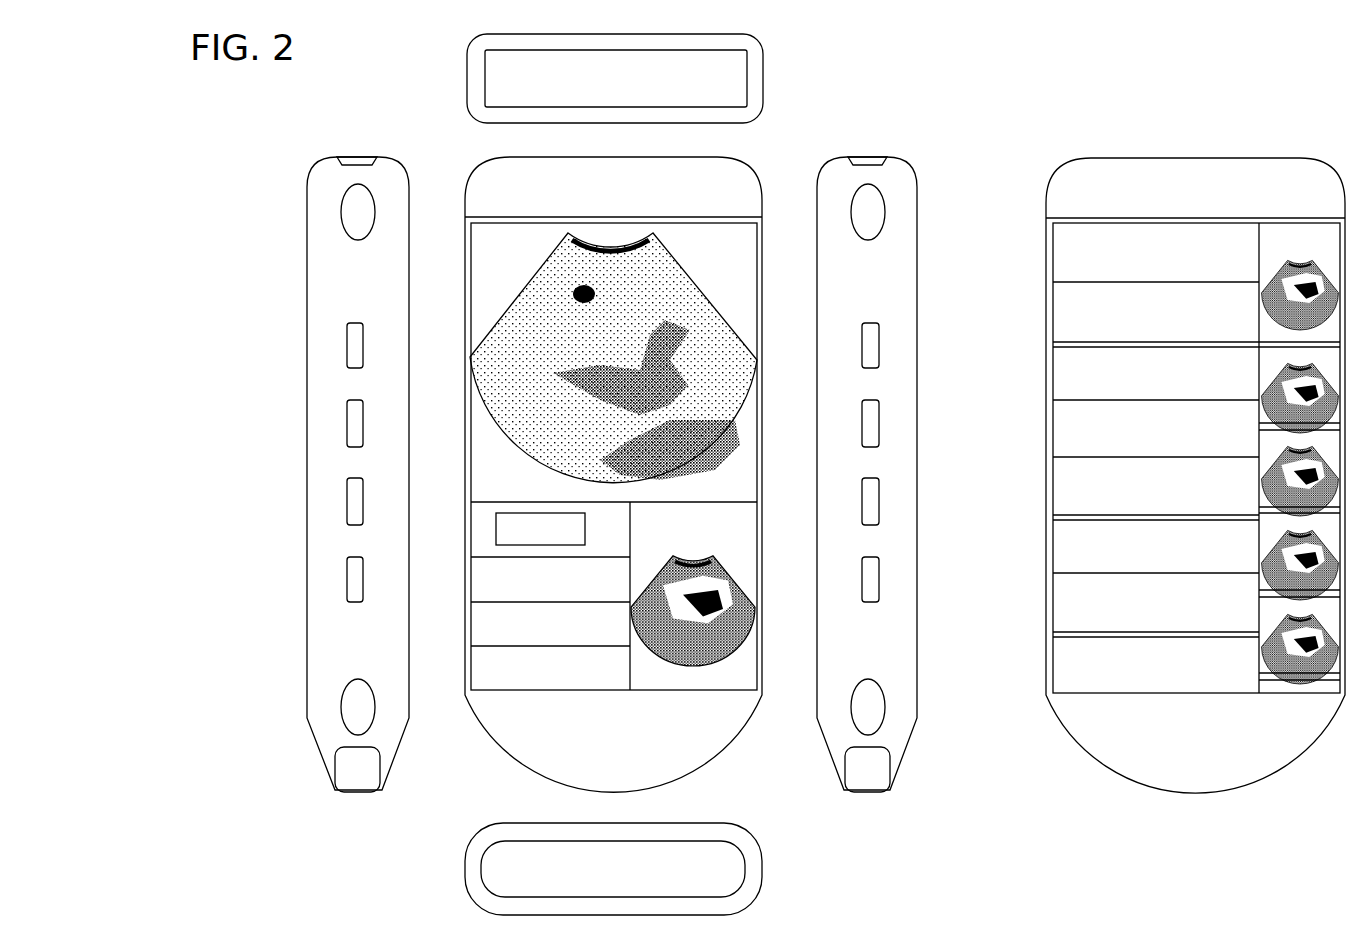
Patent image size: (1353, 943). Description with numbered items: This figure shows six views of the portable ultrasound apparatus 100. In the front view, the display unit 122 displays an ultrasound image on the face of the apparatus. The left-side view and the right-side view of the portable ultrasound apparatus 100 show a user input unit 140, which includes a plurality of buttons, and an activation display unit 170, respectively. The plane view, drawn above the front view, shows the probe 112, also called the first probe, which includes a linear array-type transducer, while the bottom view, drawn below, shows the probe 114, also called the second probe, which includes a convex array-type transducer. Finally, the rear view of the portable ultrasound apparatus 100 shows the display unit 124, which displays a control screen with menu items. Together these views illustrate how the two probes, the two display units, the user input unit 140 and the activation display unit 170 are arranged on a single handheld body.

The portable ultrasound apparatus 100 is at (744, 176).
The first probe 112 is at (763, 72).
The second probe 114 is at (762, 868).
The display unit 122 is at (482, 262).
The display unit 124 is at (1178, 175).
The user input unit 140 is at (357, 583).
The activation display unit 170 is at (352, 212).